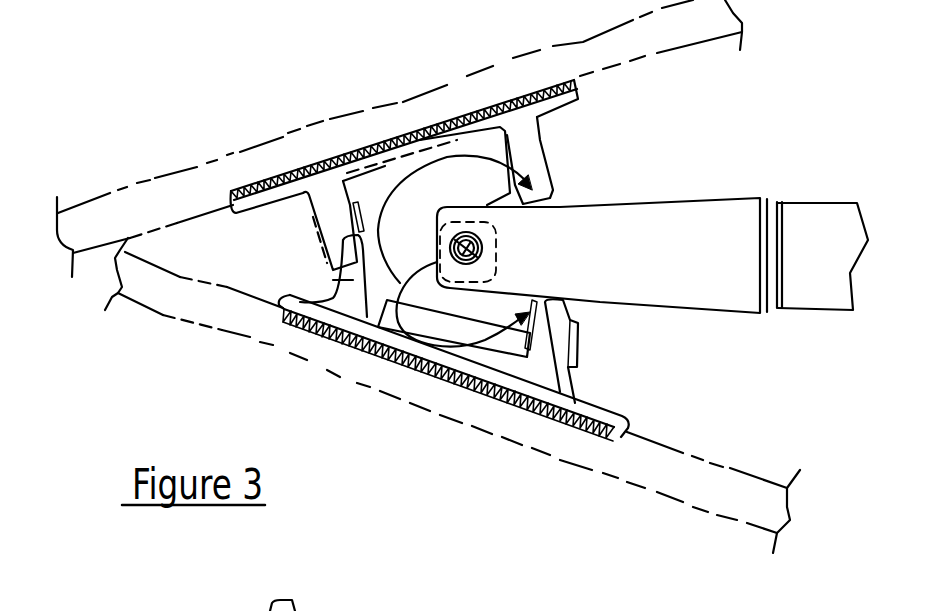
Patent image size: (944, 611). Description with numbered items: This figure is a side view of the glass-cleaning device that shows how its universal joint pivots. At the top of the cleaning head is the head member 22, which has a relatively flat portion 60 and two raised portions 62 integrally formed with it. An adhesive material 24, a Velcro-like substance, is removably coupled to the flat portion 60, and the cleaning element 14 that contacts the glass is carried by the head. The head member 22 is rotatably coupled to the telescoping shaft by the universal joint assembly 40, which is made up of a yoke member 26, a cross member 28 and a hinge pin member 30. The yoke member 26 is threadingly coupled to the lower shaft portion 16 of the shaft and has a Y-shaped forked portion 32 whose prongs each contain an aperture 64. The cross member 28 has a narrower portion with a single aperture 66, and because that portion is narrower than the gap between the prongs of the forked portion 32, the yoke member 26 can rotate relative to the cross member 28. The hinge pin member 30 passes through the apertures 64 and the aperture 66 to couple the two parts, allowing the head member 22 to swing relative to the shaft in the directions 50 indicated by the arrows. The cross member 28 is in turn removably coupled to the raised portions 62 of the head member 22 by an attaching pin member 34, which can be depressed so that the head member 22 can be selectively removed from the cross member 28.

The cleaning element 14 is at (657, 470).
The lower shaft portion 16 is at (812, 217).
The head member 22 is at (572, 438).
The adhesive material 24 is at (482, 417).
The yoke member 26 is at (668, 200).
The cross member 28 is at (400, 300).
The hinge pin member 30 is at (437, 300).
The forked portion 32 is at (560, 207).
The attaching pin member 34 is at (570, 353).
The universal joint assembly 40 is at (462, 192).
The directions 50 is at (468, 166).
The flat portion 60 is at (258, 297).
The raised portions 62 is at (355, 285).
The apertures 64 is at (350, 347).
The aperture 66 is at (383, 378).